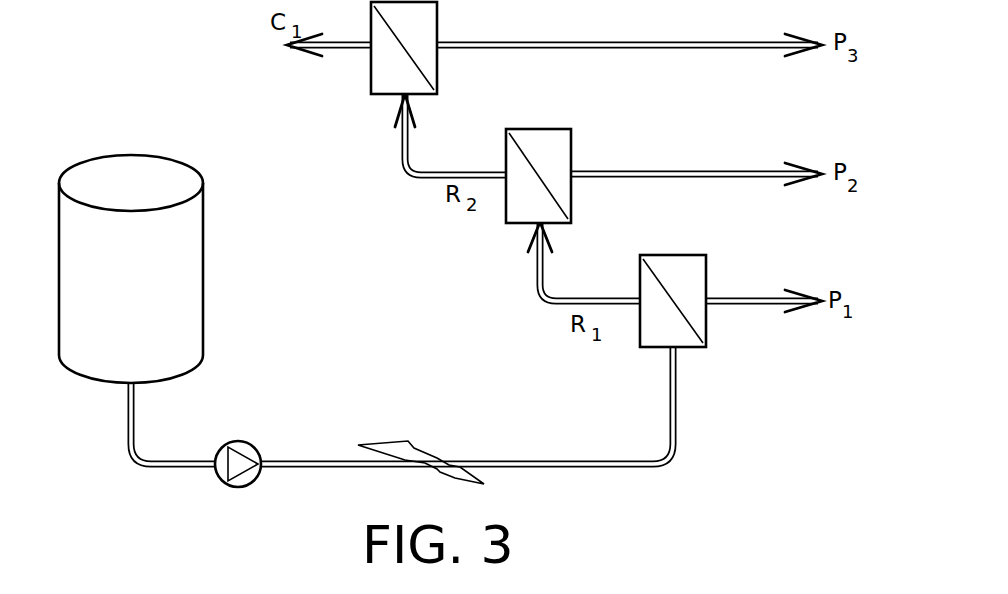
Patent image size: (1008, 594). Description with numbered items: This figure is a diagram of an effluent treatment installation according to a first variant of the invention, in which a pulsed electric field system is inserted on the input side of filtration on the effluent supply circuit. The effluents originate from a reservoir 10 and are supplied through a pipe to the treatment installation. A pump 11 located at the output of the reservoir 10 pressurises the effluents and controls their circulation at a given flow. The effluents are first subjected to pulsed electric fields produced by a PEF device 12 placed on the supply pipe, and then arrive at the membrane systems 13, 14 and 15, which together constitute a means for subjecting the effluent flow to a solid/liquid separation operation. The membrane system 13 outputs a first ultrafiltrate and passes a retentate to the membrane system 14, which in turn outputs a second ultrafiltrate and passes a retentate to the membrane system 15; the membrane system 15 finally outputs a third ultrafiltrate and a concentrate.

The reservoir 10 is at (198, 291).
The pump 11 is at (256, 482).
The PEF device 12 is at (413, 446).
The membrane system 13 is at (685, 265).
The membrane system 14 is at (555, 135).
The membrane system 15 is at (378, 67).